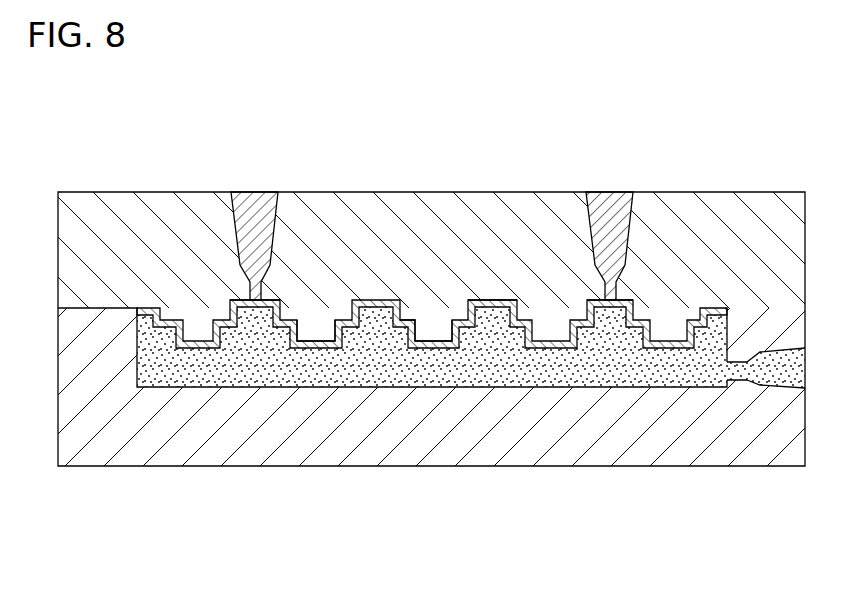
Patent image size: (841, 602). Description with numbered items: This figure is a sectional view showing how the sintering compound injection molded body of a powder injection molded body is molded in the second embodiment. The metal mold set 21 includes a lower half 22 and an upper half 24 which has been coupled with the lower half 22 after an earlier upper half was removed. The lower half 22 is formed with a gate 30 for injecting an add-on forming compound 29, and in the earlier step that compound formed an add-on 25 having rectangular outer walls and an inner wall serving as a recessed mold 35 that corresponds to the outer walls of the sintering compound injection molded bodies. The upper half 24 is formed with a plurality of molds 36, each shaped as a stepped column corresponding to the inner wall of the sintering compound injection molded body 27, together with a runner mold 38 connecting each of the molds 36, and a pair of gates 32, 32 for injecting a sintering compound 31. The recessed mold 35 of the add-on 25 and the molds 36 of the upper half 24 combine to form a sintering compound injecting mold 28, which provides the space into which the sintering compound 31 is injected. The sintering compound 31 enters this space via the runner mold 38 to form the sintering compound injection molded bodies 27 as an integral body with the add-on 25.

The metal mold set 21 is at (611, 505).
The lower half 22 is at (123, 467).
The upper half 24 is at (113, 192).
The add-on 25 is at (275, 368).
The sintering compound injection molded body 27 is at (330, 346).
The sintering compound injecting mold 28 is at (432, 211).
The add-on forming compound 29 is at (783, 382).
The gate 30 is at (737, 382).
The sintering compound 31 is at (252, 200).
The gate 32 is at (272, 291).
The recessed mold 35 is at (465, 316).
The mold 36 is at (421, 328).
The runner mold 38 is at (500, 302).